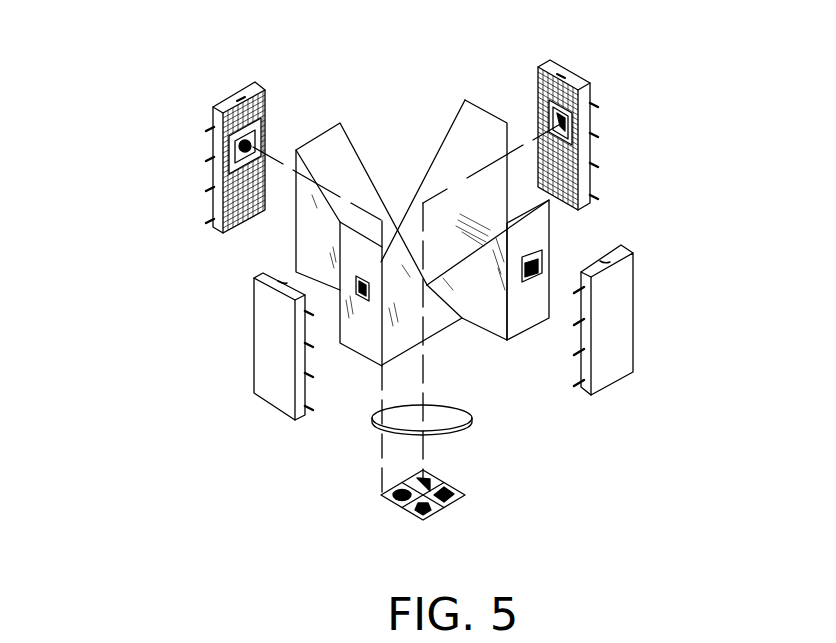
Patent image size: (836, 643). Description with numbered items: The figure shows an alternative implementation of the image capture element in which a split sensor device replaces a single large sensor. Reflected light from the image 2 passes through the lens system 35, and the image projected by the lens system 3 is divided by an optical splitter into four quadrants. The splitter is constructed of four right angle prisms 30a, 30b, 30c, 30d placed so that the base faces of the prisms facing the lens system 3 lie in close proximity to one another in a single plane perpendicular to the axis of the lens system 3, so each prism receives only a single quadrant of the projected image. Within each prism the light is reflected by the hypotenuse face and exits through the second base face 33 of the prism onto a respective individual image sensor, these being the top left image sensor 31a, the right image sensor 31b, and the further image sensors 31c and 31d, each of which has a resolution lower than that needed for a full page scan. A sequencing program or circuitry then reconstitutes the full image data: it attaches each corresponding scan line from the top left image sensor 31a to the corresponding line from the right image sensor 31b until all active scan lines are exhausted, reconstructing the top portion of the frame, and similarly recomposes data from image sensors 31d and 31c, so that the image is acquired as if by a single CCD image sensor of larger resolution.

The right angle prism 30a is at (436, 157).
The right angle prism 30b is at (538, 321).
The right angle prism 30c is at (353, 346).
The right angle prism 30d is at (377, 200).
The top left image sensor 31a is at (604, 153).
The right image sensor 31b is at (646, 325).
The image sensor 31c is at (242, 352).
The image sensor 31d is at (190, 178).
The second base face 33 is at (551, 256).
The lens system 35 is at (522, 145).
The lens system 3 is at (484, 420).
The image 2 is at (484, 493).